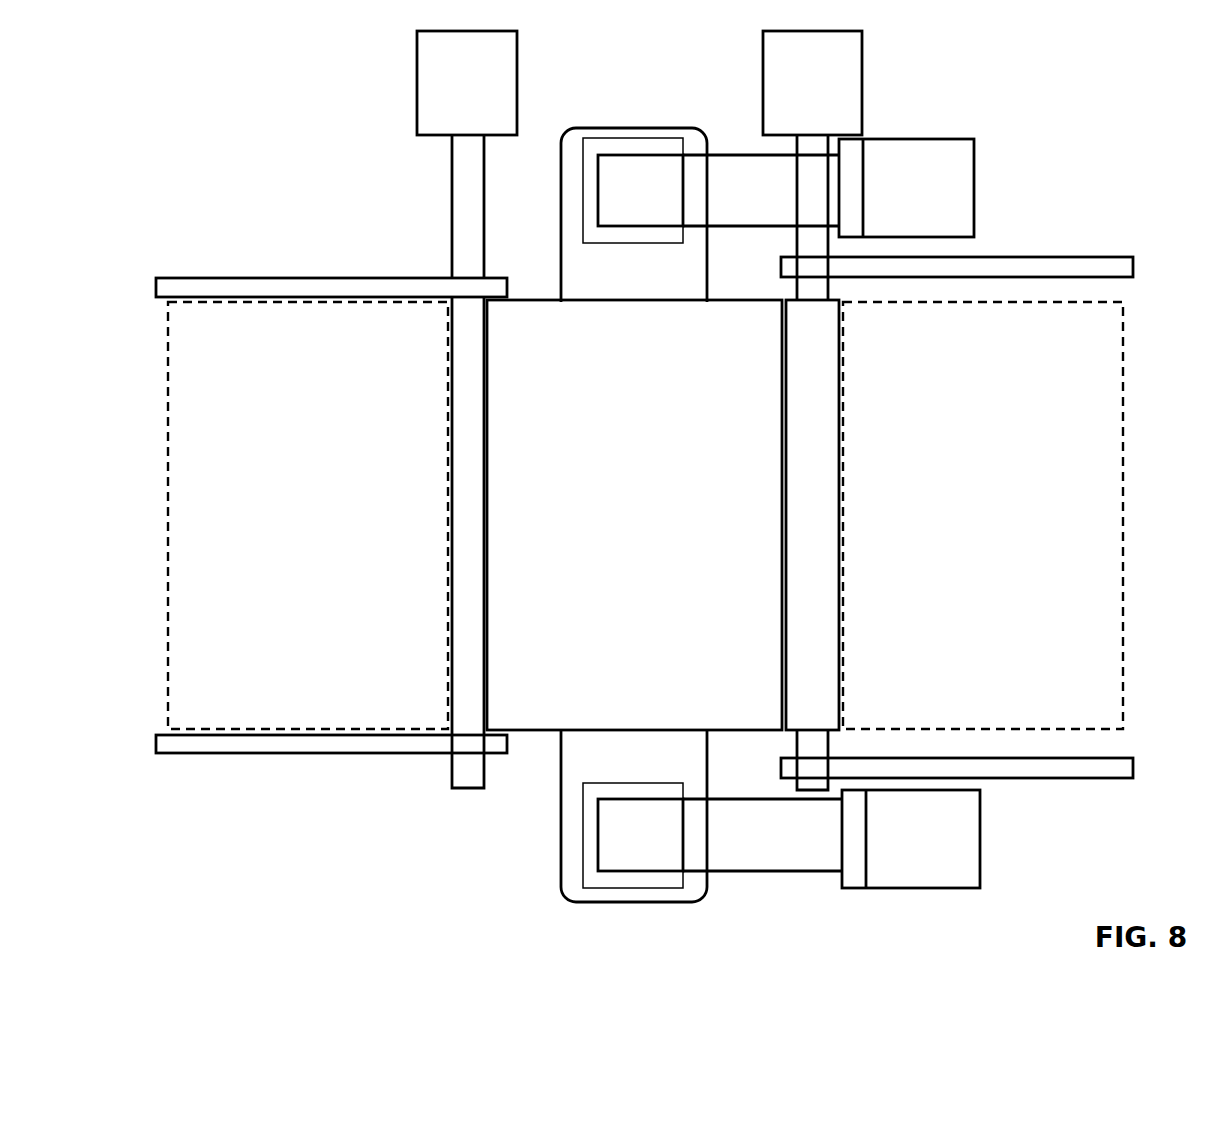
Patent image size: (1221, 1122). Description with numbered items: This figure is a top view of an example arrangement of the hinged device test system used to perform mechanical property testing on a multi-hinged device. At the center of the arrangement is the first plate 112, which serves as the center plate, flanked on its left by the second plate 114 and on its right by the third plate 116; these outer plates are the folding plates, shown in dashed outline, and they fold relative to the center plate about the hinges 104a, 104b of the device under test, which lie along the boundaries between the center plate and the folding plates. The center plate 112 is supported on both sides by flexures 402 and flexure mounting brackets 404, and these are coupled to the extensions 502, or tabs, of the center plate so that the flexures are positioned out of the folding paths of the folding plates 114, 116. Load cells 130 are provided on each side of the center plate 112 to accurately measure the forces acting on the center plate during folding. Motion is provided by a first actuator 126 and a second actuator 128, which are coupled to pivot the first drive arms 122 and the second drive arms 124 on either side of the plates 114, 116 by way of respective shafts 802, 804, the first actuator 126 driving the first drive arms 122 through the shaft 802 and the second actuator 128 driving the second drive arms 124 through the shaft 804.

The hinge 104a is at (463, 465).
The hinge 104b is at (802, 448).
The first plate 112 is at (634, 515).
The second plate 114 is at (308, 515).
The third plate 116 is at (983, 515).
The first drive arm 122 is at (303, 285).
The second drive arm 124 is at (1013, 267).
The first actuator 126 is at (467, 83).
The second actuator 128 is at (812, 83).
The load cell 130 is at (633, 513).
The flexure 402 is at (742, 152).
The flexure mounting bracket 404 is at (909, 513).
The extension 502 is at (573, 182).
The shaft 802 is at (458, 202).
The shaft 804 is at (808, 210).